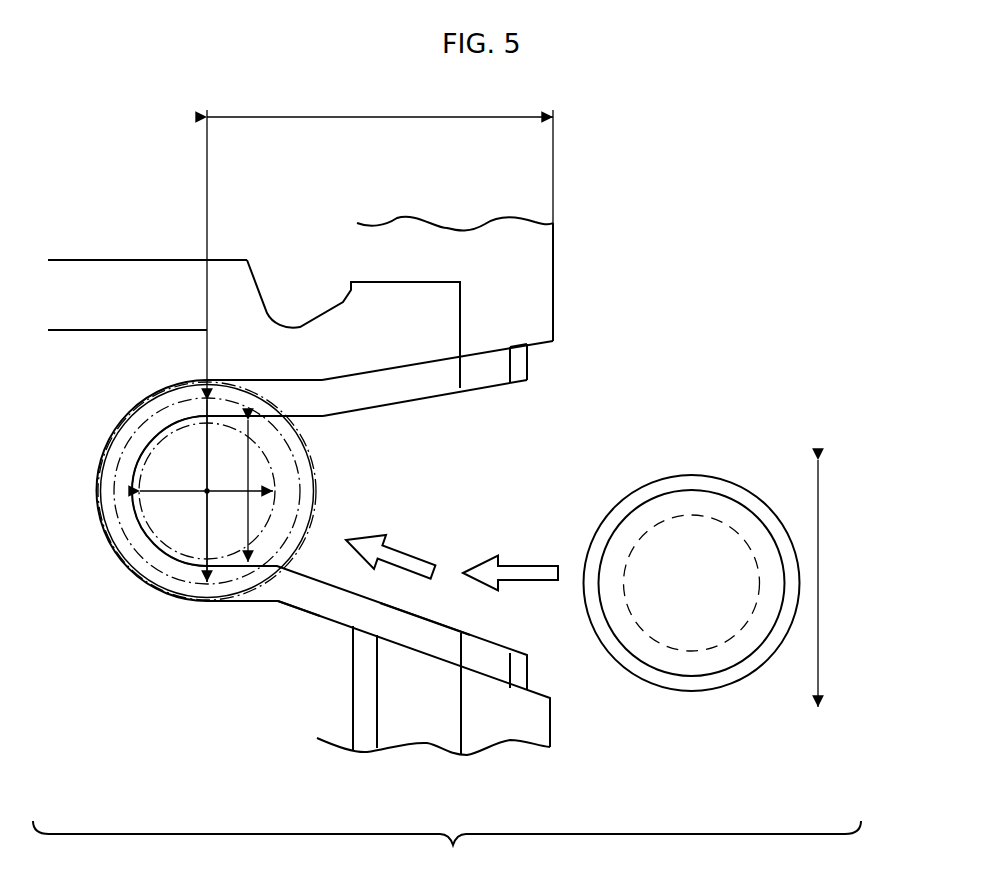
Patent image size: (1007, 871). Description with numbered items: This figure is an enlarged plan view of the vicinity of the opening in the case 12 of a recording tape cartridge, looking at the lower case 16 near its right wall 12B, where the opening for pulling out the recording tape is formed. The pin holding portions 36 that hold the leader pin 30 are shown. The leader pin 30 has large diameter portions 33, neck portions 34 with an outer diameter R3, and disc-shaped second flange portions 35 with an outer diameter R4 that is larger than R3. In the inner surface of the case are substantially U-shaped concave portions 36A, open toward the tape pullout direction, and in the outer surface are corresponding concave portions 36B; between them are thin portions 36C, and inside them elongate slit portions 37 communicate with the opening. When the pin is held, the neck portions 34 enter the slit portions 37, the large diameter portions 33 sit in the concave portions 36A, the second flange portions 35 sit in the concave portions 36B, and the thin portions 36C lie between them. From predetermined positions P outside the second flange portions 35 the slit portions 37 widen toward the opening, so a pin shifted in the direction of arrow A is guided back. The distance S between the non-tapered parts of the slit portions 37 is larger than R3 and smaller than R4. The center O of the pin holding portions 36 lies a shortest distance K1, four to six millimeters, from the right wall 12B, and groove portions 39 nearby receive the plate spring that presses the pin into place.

The shortest distance K1 is at (382, 115).
The groove portions 39 is at (122, 262).
The lower case 16 is at (556, 258).
The case 12 is at (447, 297).
The right wall 12B is at (556, 302).
The pin holding portions 36 is at (93, 523).
The concave portions 36A is at (300, 598).
The concave portions 36B is at (493, 663).
The thin portions 36C is at (437, 633).
The predetermined positions P is at (277, 603).
The leader pin 30 is at (414, 554).
The large diameter portions 33 is at (95, 497).
The neck portions 34 is at (145, 452).
The second flange portions 35 is at (122, 537).
The center O is at (207, 491).
The outer diameter R3 is at (180, 488).
The outer diameter R4 is at (210, 477).
The distance S is at (273, 482).
The slit portions 37 is at (353, 497).
The arrow A is at (818, 583).